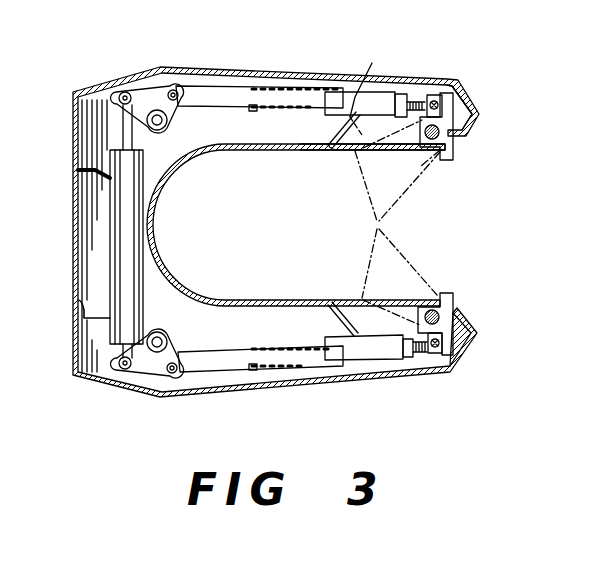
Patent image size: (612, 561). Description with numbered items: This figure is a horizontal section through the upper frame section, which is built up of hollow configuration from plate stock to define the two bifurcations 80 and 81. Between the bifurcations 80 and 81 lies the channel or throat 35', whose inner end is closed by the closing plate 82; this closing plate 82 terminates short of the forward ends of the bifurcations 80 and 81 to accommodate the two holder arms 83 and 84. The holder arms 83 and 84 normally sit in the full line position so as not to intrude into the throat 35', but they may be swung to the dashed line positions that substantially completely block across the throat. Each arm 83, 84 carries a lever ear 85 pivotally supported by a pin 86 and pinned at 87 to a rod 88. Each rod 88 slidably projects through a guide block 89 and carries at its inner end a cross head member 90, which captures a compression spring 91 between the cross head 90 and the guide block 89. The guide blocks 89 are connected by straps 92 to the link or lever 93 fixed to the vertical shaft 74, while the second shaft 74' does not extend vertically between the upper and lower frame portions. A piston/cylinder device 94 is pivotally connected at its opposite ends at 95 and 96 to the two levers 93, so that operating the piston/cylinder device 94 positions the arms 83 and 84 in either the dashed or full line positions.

The bifurcation 80 is at (415, 73).
The bifurcation 81 is at (462, 365).
The closing plate 82 is at (254, 151).
The holder arm 83 is at (355, 151).
The holder arm 84 is at (410, 297).
The lever ear 85 is at (448, 123).
The pin 86 is at (442, 135).
The pin connection 87 is at (455, 97).
The rod 88 is at (421, 103).
The guide block 89 is at (372, 355).
The cross head member 90 is at (254, 87).
The compression spring 91 is at (298, 88).
The strap 92 is at (212, 96).
The link or lever 93 is at (143, 93).
The piston/cylinder device 94 is at (147, 175).
The pivotal connection 95 is at (124, 91).
The pivotal connection 96 is at (122, 373).
The vertical shaft 74 is at (175, 129).
The second shaft 74' is at (176, 331).
The channel or throat 35' is at (476, 210).